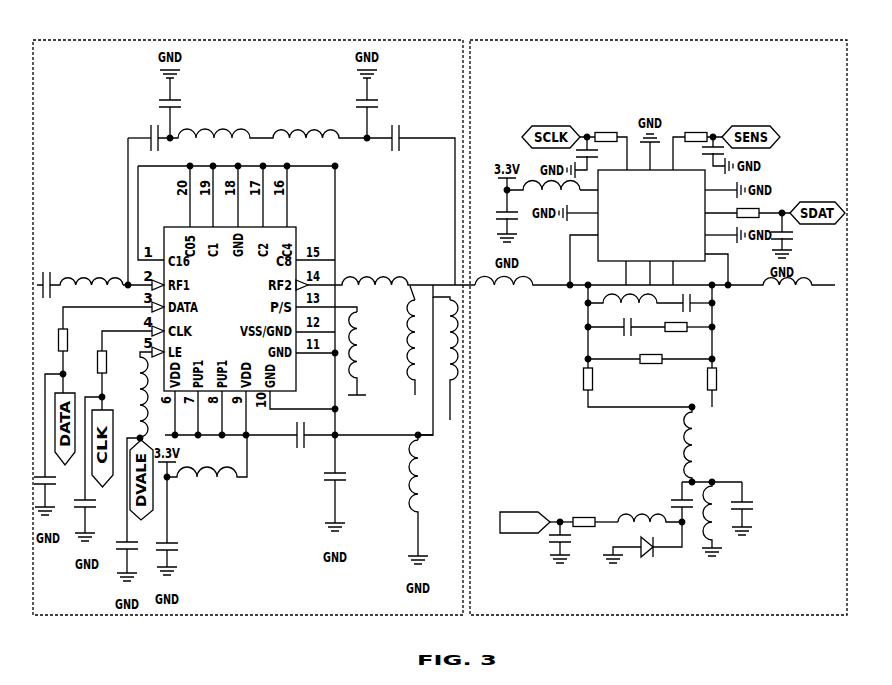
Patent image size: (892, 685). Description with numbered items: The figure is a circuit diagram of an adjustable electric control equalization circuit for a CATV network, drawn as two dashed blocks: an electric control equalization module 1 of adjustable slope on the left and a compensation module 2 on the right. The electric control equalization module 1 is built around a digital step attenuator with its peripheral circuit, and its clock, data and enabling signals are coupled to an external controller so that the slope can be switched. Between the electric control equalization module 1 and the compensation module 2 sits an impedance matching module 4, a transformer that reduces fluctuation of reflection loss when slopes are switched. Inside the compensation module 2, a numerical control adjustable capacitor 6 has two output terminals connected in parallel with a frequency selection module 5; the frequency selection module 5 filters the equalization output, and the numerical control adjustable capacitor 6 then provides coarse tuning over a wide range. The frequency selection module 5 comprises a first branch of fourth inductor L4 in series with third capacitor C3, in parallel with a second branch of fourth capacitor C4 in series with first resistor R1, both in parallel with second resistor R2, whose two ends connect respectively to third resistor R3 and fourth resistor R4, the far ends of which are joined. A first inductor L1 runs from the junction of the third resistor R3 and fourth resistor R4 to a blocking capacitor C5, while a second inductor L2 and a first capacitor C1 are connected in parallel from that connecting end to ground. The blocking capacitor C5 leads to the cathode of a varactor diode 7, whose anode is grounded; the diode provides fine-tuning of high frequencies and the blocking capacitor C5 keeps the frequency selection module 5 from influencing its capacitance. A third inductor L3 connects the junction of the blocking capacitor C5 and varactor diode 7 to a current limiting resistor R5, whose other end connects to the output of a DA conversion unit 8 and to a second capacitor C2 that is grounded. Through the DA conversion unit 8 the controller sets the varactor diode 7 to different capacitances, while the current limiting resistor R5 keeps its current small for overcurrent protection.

The electric control equalization module 1 is at (90, 40).
The compensation module 2 is at (537, 40).
The impedance matching module 4 is at (450, 418).
The frequency selection module 5 is at (720, 287).
The numerical control adjustable capacitor 6 is at (683, 170).
The varactor diode 7 is at (650, 558).
The DA conversion unit 8 is at (535, 512).
The first resistor R1 is at (685, 331).
The second resistor R2 is at (653, 365).
The third resistor R3 is at (582, 378).
The fourth resistor R4 is at (717, 380).
The current limiting resistor R5 is at (585, 512).
The first capacitor C1 is at (751, 506).
The second capacitor C2 is at (553, 547).
The third capacitor C3 is at (693, 305).
The fourth capacitor C4 is at (622, 330).
The blocking capacitor C5 is at (677, 501).
The first inductor L1 is at (692, 436).
The second inductor L2 is at (716, 518).
The third inductor L3 is at (641, 512).
The fourth inductor L4 is at (612, 302).